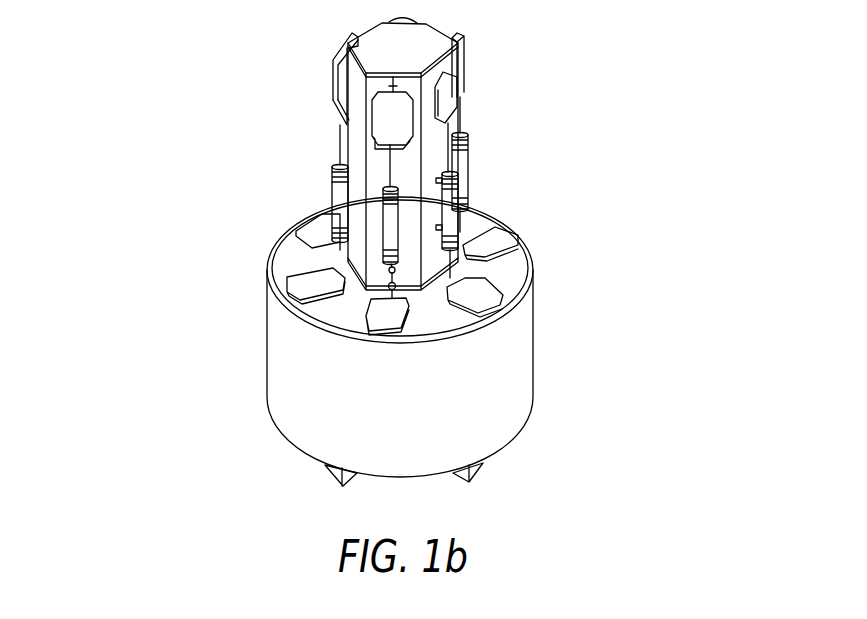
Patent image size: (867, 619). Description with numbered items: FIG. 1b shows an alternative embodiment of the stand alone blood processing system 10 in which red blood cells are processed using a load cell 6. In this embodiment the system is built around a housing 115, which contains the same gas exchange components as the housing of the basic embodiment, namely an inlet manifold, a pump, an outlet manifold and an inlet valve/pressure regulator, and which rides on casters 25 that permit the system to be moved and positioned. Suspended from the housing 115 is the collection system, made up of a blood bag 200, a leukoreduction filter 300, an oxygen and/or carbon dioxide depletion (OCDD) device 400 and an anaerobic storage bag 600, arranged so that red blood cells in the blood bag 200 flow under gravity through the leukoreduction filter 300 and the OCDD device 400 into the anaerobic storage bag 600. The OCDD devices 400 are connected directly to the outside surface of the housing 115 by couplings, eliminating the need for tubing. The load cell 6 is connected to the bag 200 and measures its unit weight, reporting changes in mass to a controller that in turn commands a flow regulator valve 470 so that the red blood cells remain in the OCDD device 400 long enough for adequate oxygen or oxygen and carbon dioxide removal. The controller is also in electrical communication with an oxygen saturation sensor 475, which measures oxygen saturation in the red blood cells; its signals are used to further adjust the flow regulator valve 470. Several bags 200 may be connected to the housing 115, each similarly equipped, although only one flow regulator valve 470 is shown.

The stand alone blood processing system 10 is at (581, 63).
The load cell 6 is at (410, 77).
The blood bag 200 is at (337, 93).
The leukoreduction filter 300 is at (332, 168).
The oxygen and/or carbon dioxide depletion (OCDD) device 400 is at (332, 200).
The anaerobic storage bag 600 is at (287, 278).
The oxygen saturation sensor 475 is at (396, 268).
The flow regulator valve 470 is at (396, 284).
The housing 115 is at (287, 378).
The casters 25 is at (326, 470).